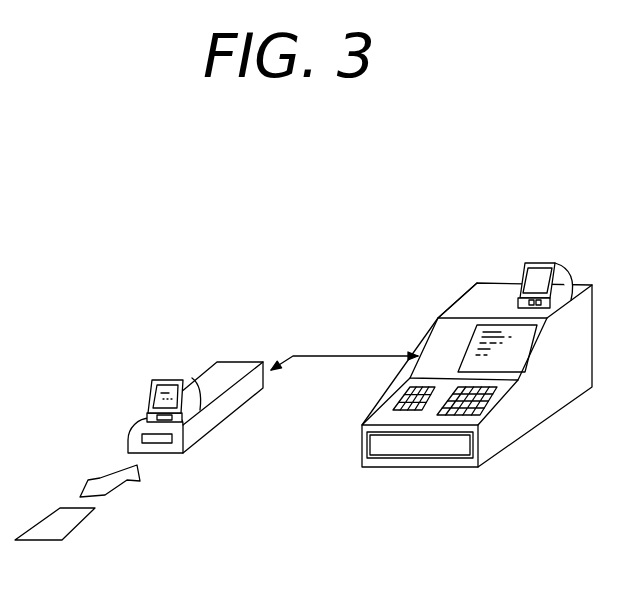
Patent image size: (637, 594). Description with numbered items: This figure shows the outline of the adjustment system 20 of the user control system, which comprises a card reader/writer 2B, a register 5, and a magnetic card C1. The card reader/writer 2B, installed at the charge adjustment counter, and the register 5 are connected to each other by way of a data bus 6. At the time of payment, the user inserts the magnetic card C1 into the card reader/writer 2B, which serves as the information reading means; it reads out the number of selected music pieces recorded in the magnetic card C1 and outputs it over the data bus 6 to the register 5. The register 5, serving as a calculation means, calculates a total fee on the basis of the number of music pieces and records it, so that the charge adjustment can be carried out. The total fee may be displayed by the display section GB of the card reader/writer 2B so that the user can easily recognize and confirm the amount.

The adjustment system 20 is at (148, 202).
The register 5 is at (522, 425).
The data bus 6 is at (337, 358).
The card reader/writer 2B is at (217, 433).
The display section GB is at (151, 395).
The magnetic card C1 is at (58, 510).